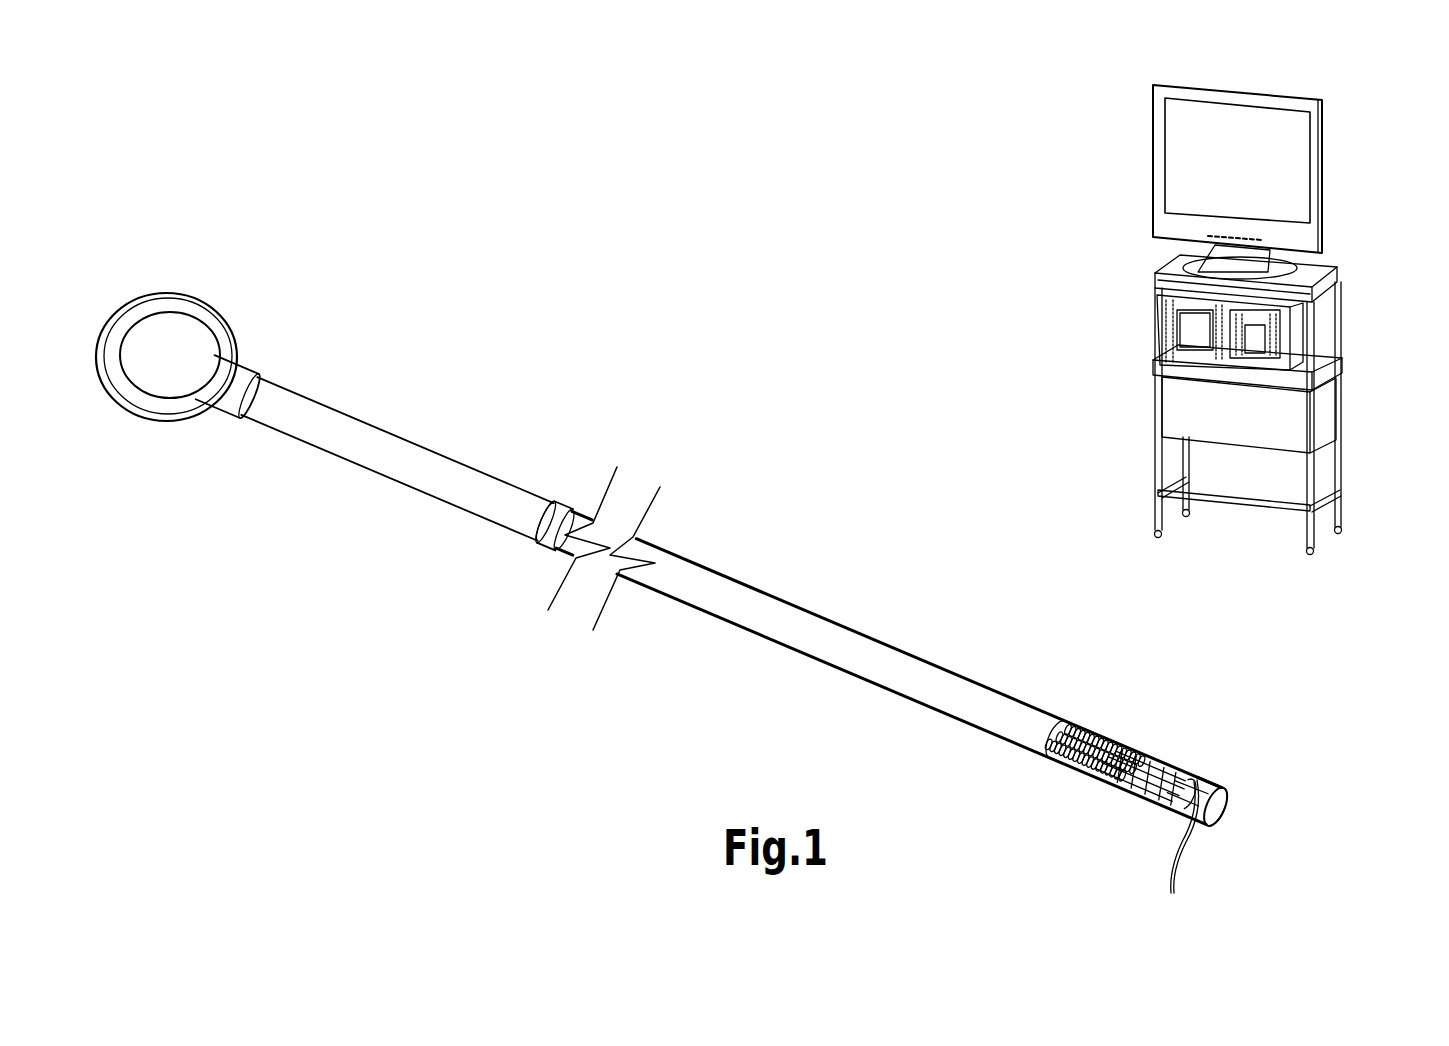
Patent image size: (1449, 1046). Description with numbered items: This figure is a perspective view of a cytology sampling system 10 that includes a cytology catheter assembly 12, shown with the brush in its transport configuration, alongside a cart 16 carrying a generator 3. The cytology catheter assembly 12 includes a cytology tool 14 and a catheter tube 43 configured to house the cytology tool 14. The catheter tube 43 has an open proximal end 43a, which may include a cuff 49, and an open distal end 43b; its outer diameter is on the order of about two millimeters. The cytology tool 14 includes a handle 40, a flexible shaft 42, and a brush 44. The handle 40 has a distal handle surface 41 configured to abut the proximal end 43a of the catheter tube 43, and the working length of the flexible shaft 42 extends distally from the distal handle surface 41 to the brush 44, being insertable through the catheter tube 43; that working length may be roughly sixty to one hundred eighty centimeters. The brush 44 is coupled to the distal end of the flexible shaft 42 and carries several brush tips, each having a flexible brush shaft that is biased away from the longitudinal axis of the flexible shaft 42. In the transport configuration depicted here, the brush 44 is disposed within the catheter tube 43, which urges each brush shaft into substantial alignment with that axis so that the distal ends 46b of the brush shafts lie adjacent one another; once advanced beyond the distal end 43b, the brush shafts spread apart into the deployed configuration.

The cytology sampling system 10 is at (731, 168).
The cytology catheter assembly 12 is at (889, 506).
The cytology tool 14 is at (405, 437).
The cart 16 is at (1345, 306).
The generator 3 is at (1157, 331).
The handle 40 is at (234, 366).
The distal handle surface 41 is at (257, 380).
The flexible shaft 42 is at (877, 655).
The catheter tube 43 is at (1216, 780).
The proximal end 43a is at (556, 505).
The distal end 43b is at (1225, 817).
The brush 44 is at (1103, 777).
The distal end 46b is at (1196, 851).
The cuff 49 is at (547, 548).